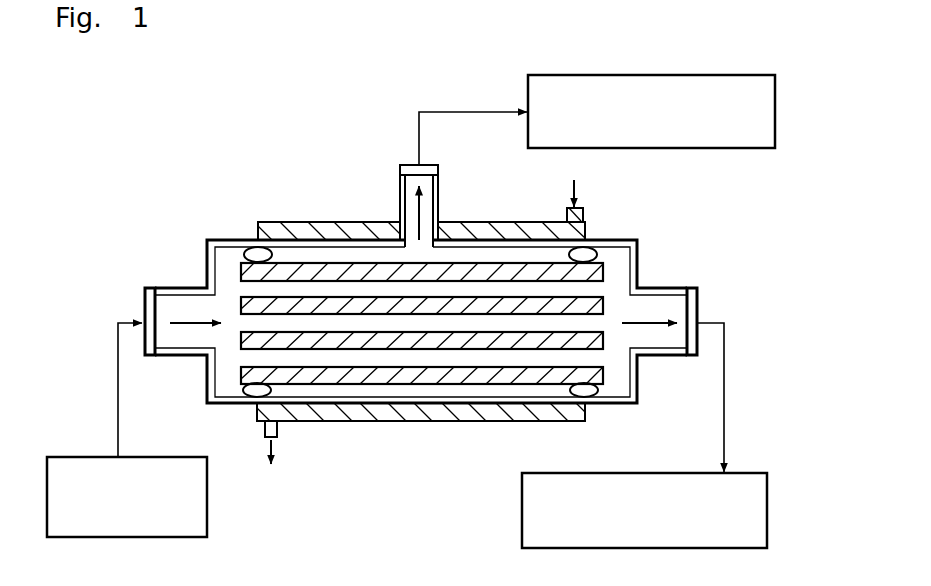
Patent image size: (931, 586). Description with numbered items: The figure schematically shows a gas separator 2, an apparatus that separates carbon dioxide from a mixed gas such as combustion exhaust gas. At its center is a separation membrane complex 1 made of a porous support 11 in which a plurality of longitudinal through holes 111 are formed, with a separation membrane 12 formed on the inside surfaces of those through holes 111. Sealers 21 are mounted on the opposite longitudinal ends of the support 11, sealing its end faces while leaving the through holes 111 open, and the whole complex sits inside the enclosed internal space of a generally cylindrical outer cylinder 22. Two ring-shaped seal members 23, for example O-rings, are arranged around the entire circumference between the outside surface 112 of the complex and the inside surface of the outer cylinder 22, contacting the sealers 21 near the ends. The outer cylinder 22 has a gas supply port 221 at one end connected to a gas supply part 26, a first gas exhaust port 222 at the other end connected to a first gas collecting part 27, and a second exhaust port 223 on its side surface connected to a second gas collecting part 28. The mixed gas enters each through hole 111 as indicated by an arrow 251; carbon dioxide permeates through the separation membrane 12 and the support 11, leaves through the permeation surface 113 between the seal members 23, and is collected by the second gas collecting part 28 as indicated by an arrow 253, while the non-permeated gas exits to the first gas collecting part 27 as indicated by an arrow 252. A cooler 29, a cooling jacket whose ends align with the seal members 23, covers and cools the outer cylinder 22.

The separation membrane complex 1 is at (230, 383).
The gas separator 2 is at (170, 87).
The support 11 is at (540, 374).
The separation membrane 12 is at (477, 316).
The through holes 111 is at (380, 324).
The outside surface 112 is at (310, 508).
The permeation surface 113 is at (318, 387).
The sealers 21 is at (240, 275).
The outer cylinder 22 is at (227, 242).
The seal members 23 is at (258, 252).
The gas supply port 221 is at (168, 292).
The first gas exhaust port 222 is at (672, 295).
The second exhaust port 223 is at (410, 188).
The arrow 251 is at (177, 322).
The arrow 252 is at (653, 323).
The arrow 253 is at (418, 215).
The gas supply part 26 is at (207, 494).
The first gas collecting part 27 is at (522, 510).
The second gas collecting part 28 is at (528, 92).
The cooler 29 is at (512, 223).